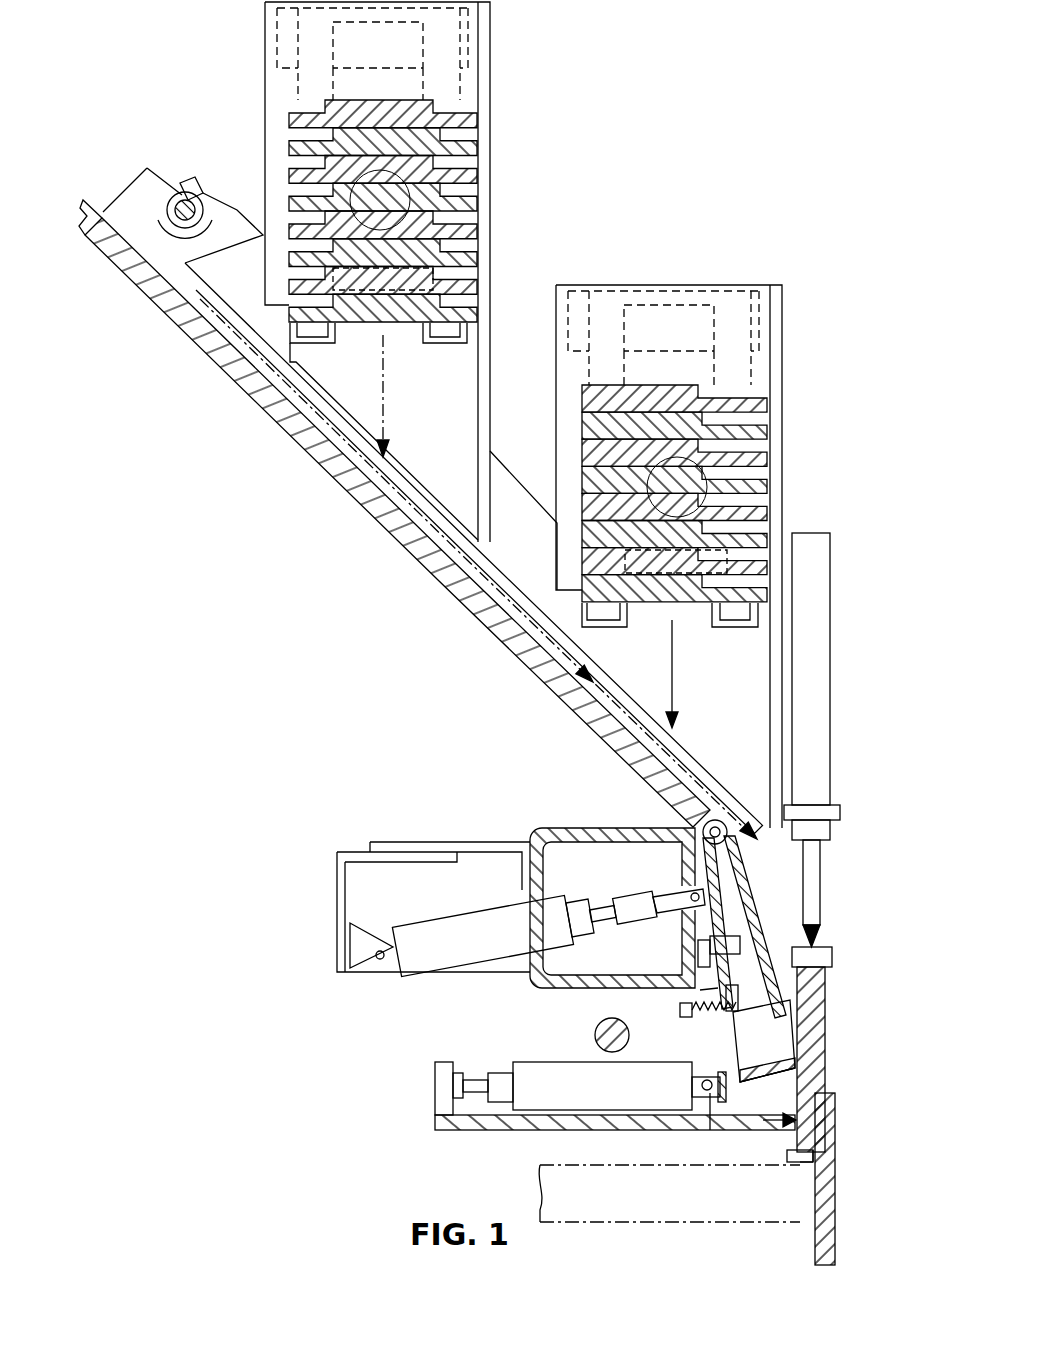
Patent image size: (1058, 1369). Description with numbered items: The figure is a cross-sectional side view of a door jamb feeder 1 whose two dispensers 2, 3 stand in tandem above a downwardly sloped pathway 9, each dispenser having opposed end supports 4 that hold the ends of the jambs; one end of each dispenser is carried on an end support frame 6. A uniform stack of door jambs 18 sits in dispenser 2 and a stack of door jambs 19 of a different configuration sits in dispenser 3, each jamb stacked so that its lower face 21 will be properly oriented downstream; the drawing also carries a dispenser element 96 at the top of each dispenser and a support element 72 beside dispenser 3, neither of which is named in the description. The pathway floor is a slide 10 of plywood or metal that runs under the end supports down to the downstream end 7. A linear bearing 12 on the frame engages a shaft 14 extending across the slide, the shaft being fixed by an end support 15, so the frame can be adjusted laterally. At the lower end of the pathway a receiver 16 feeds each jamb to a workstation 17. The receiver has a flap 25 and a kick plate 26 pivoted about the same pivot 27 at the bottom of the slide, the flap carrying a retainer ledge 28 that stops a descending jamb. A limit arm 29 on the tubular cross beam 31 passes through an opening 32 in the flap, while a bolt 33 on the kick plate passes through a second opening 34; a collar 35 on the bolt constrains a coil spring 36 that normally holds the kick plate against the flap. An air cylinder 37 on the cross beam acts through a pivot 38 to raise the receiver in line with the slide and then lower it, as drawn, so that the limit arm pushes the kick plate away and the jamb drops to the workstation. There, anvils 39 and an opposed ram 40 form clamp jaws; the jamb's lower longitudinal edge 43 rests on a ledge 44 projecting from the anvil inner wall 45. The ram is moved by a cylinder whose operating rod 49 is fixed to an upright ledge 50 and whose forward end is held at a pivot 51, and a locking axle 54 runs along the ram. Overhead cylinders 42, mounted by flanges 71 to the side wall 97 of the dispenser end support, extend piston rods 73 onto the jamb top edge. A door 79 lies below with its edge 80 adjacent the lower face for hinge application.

The feeder 1 is at (303, 683).
The dispenser 2 is at (806, 345).
The dispenser 3 is at (518, 43).
The end support 4 is at (470, 106).
The end support frame 6 is at (530, 556).
The downstream end 7 is at (700, 818).
The pathway 9 is at (308, 400).
The slide 10 is at (214, 342).
The linear bearing 12 is at (187, 190).
The shaft 14 is at (202, 196).
The end support 15 is at (126, 192).
The receiver 16 is at (483, 1015).
The workstation 17 is at (835, 1022).
The door jambs 18 is at (288, 172).
The door jambs 19 is at (582, 441).
The lower face 21 is at (471, 112).
The flap 25 is at (718, 999).
The kick plate 26 is at (742, 886).
The pivot 27 is at (702, 830).
The retainer ledge 28 is at (788, 1080).
The limit arm 29 is at (695, 942).
The tubular cross beam 31 is at (570, 828).
The opening 32 is at (732, 938).
The bolt 33 is at (764, 1041).
The opening 34 is at (742, 985).
The collar 35 is at (688, 1024).
The coil spring 36 is at (709, 1076).
The air cylinder 37 is at (478, 956).
The pivot 38 is at (690, 888).
The anvils 39 is at (832, 1158).
The ram 40 is at (511, 1130).
The overhead cylinders 42 is at (818, 644).
The lower longitudinal edge 43 is at (794, 1141).
The ledge 44 is at (800, 1165).
The inner wall 45 is at (812, 1138).
The operating rod 49 is at (466, 1078).
The upright ledge 50 is at (434, 1083).
The pivot 51 is at (710, 1130).
The axle 54 is at (604, 1024).
The flanges 71 is at (841, 812).
The magazine support 72 is at (782, 488).
The piston rods 73 is at (818, 886).
The door 79 is at (620, 1208).
The edge 80 is at (818, 1197).
The pusher 96 is at (316, 12).
The side wall 97 is at (489, 281).